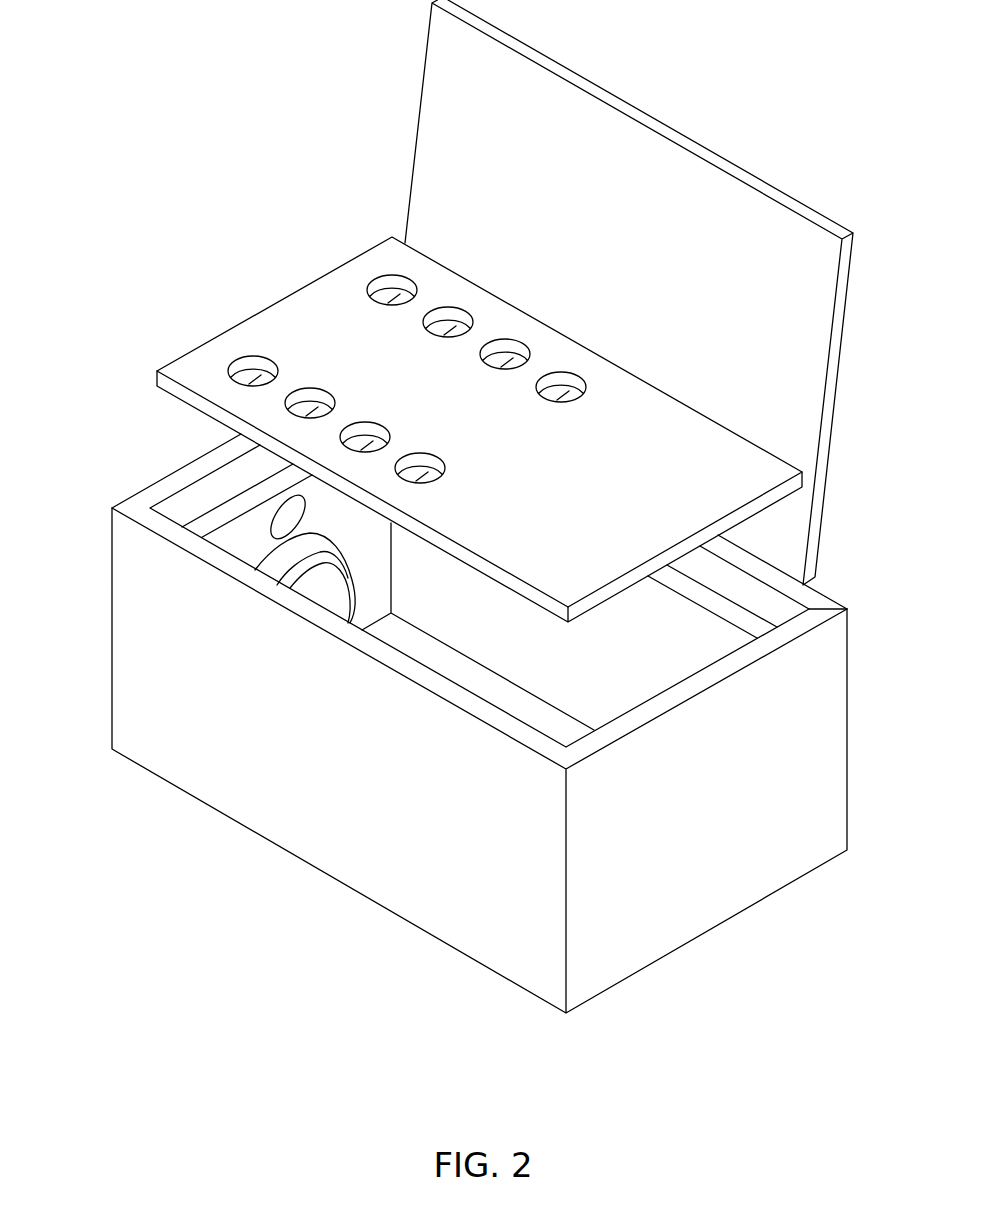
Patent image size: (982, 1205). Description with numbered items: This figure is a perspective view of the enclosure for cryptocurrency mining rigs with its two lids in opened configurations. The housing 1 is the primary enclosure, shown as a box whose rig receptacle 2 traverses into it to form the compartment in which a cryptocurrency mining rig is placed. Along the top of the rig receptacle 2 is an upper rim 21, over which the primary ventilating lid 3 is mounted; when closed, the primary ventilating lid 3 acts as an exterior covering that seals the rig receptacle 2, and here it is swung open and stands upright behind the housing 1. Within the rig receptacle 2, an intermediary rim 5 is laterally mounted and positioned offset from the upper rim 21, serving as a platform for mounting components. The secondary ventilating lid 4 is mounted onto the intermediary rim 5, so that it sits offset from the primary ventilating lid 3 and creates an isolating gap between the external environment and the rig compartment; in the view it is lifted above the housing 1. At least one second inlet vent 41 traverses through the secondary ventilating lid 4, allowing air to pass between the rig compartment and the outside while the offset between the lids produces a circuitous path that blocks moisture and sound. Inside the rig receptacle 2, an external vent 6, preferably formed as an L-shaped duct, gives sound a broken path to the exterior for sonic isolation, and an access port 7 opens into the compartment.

The housing 1 is at (654, 949).
The rig receptacle 2 is at (612, 682).
The upper rim 21 is at (823, 602).
The primary ventilating lid 3 is at (547, 66).
The secondary ventilating lid 4 is at (287, 302).
The second inlet vent 41 is at (252, 378).
The intermediary rim 5 is at (208, 522).
The external vent 6 is at (352, 598).
The access port 7 is at (293, 515).